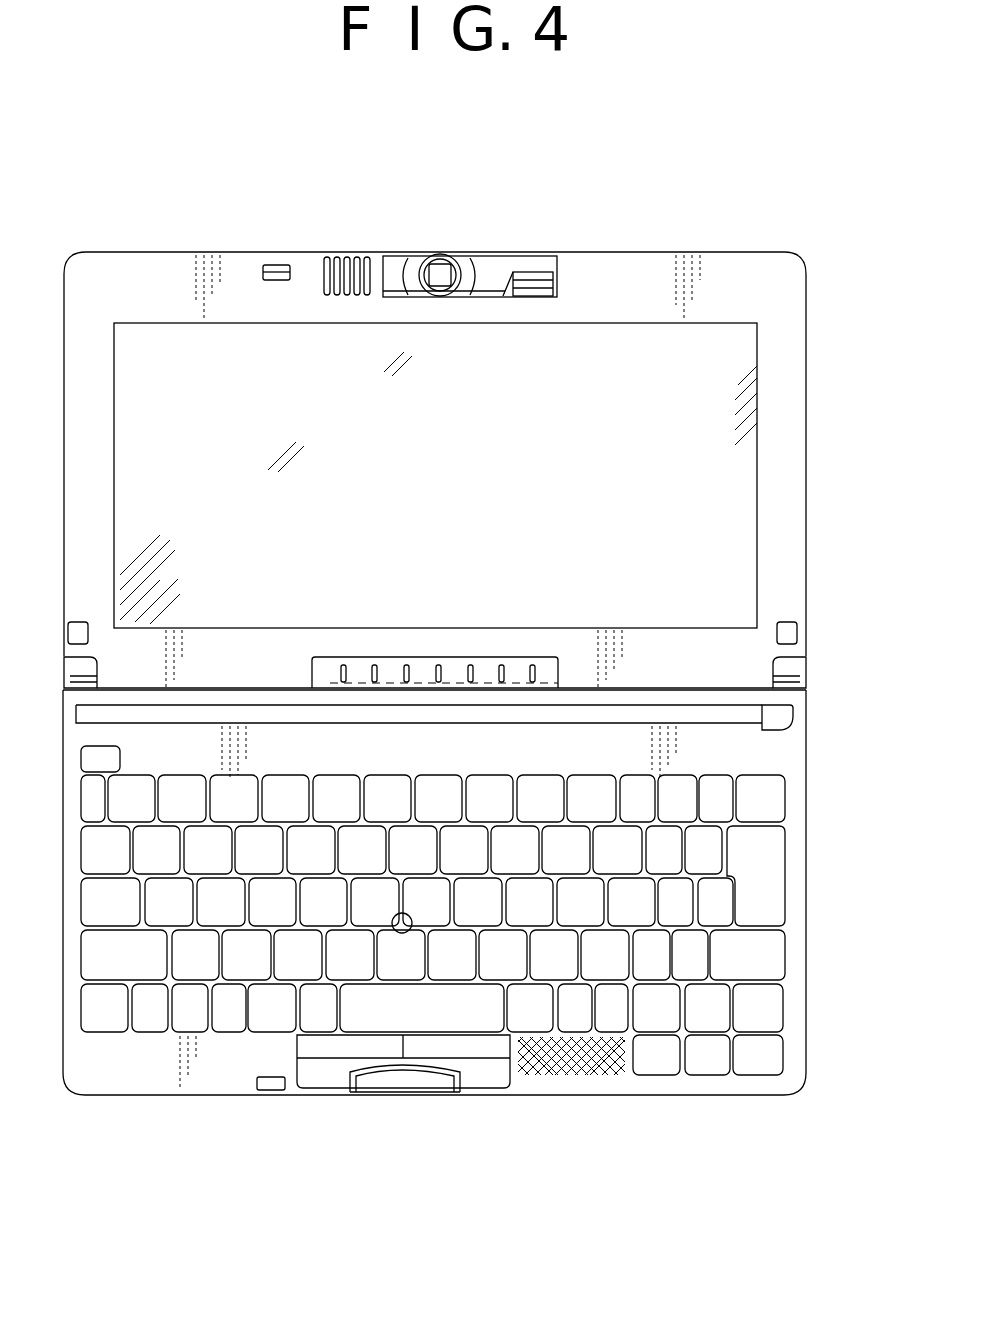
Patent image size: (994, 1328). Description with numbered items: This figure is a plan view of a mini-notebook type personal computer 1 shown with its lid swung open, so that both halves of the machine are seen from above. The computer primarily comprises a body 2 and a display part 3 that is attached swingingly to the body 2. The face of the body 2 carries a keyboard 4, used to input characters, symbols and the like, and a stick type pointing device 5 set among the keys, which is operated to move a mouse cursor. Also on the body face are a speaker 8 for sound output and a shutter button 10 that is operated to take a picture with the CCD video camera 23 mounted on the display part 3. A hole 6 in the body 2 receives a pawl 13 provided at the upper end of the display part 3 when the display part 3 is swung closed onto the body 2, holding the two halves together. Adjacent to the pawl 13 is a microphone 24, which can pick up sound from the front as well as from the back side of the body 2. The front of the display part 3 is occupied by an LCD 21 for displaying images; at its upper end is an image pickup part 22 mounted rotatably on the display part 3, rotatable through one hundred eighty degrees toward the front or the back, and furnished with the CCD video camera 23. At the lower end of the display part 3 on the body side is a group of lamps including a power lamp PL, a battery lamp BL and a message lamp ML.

The personal computer 1 is at (317, 1138).
The body 2 is at (806, 808).
The display part 3 is at (724, 252).
The keyboard 4 is at (766, 953).
The stick type pointing device 5 is at (403, 936).
The hole 6 is at (266, 1090).
The speaker 8 is at (573, 1072).
The shutter button 10 is at (781, 713).
The pawl 13 is at (273, 266).
The LCD 21 is at (158, 334).
The image pickup part 22 is at (527, 266).
The CCD video camera 23 is at (438, 268).
The microphone 24 is at (347, 258).
The message lamp ML is at (470, 663).
The battery lamp BL is at (501, 663).
The power lamp PL is at (533, 663).